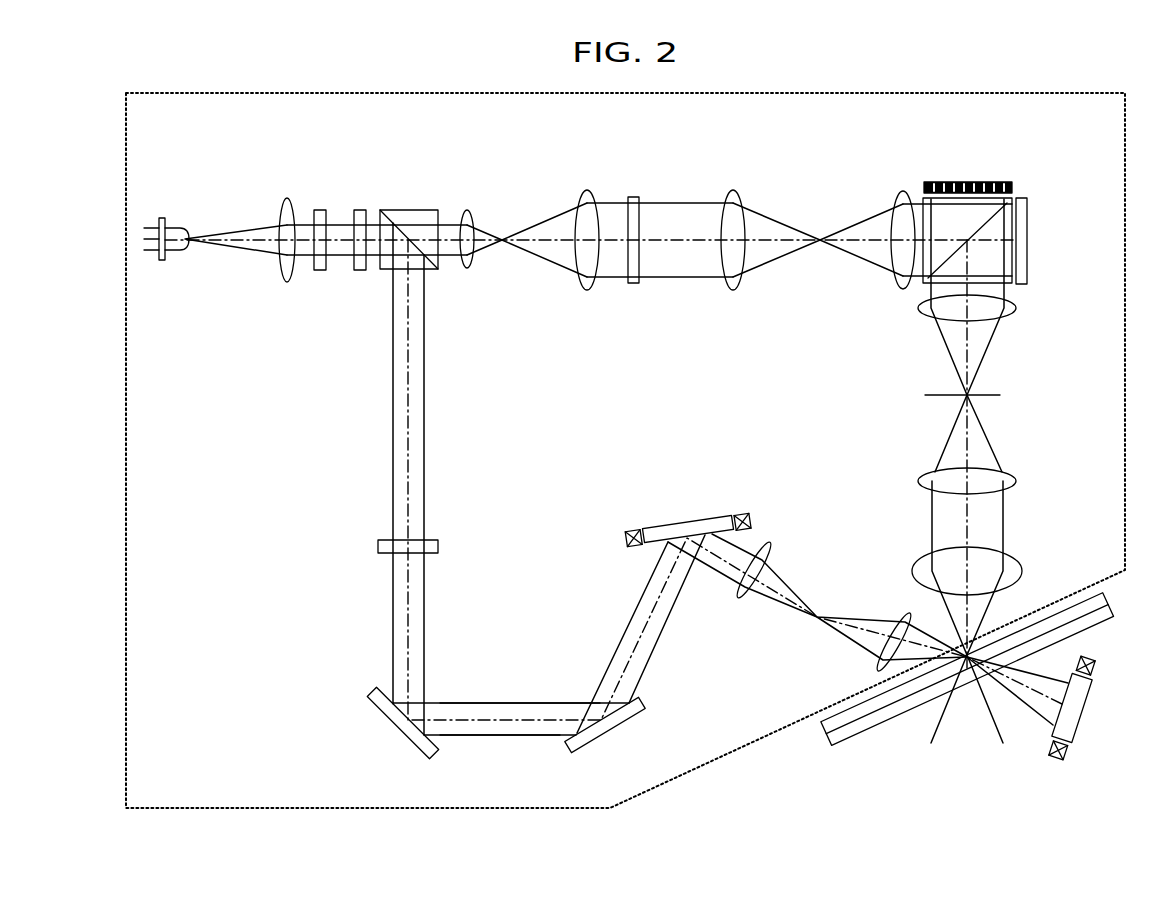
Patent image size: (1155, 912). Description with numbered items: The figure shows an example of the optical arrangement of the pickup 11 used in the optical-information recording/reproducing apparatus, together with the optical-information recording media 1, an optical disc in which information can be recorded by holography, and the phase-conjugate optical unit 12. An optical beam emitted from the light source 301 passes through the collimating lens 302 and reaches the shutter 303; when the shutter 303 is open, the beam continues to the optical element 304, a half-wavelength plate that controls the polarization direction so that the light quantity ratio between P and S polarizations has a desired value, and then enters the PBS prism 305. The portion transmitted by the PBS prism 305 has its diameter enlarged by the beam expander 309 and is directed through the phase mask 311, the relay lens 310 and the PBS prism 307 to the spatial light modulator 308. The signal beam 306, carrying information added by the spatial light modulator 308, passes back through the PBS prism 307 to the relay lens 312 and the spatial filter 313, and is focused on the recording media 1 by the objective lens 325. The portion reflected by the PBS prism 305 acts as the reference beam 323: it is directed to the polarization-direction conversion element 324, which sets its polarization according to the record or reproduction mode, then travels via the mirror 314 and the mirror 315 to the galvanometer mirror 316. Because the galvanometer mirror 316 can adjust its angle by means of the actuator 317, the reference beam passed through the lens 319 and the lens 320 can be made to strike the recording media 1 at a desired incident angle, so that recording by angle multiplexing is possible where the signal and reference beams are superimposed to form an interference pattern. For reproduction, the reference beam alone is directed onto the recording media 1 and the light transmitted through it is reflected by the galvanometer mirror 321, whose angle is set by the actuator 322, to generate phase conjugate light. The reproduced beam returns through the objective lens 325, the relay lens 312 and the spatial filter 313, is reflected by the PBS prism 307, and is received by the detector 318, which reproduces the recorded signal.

The optical-information recording media 1 is at (860, 742).
The pickup 11 is at (220, 806).
The phase-conjugate optical unit 12 is at (1085, 810).
The light source 301 is at (180, 219).
The collimating lens 302 is at (288, 197).
The shutter 303 is at (320, 210).
The optical element 304 is at (360, 210).
The PBS prism 305 is at (410, 210).
The signal beam 306 is at (673, 210).
The PBS prism 307 is at (942, 220).
The spatial light modulator 308 is at (970, 182).
The beam expander 309 is at (587, 183).
The relay lens 310 is at (903, 183).
The phase mask 311 is at (632, 285).
The relay lens 312 is at (903, 308).
The spatial filter 313 is at (1002, 394).
The mirror 314 is at (390, 733).
The mirror 315 is at (612, 731).
The galvanometer mirror 316 is at (697, 515).
The actuator 317 is at (630, 530).
The detector 318 is at (1030, 240).
The lens 319 is at (743, 598).
The lens 320 is at (897, 618).
The galvanometer mirror 321 is at (1082, 713).
The actuator 322 is at (1050, 762).
The light beam 323 is at (510, 710).
The polarization-direction conversion element 324 is at (378, 547).
The objective lens 325 is at (1012, 575).